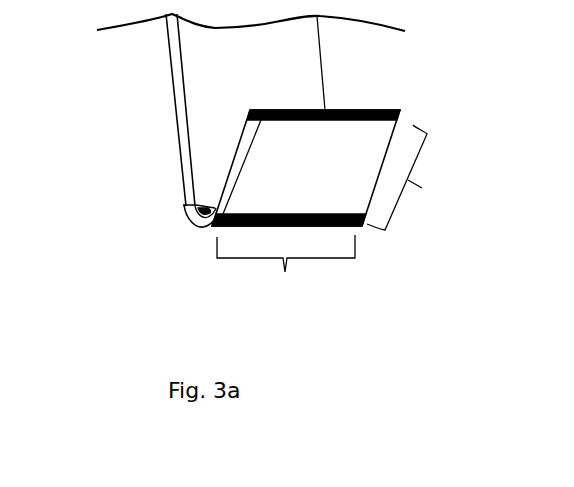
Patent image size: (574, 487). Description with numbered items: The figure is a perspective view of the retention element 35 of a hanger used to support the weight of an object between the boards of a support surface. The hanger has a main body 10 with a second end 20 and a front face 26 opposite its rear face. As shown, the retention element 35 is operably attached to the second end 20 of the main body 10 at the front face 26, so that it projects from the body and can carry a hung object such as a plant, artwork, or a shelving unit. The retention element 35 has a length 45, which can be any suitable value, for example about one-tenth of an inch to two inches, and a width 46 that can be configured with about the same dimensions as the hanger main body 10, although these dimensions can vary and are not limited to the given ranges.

The main body 10 is at (208, 92).
The second end 20 is at (207, 222).
The front face 26 is at (270, 86).
The retention element 35 is at (352, 147).
The length 45 is at (417, 177).
The width 46 is at (286, 273).